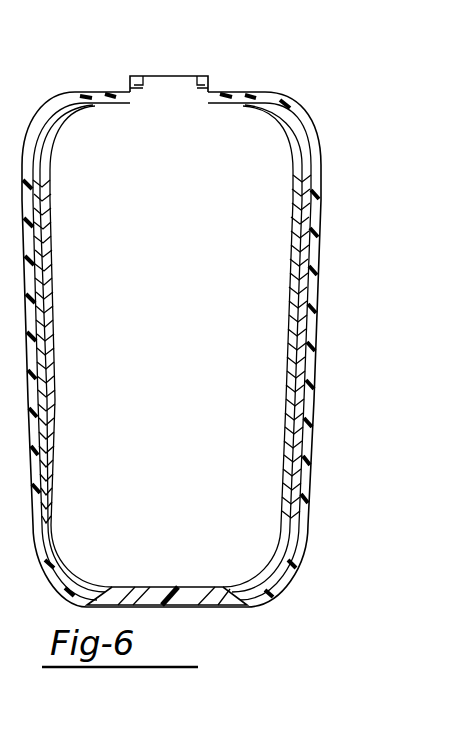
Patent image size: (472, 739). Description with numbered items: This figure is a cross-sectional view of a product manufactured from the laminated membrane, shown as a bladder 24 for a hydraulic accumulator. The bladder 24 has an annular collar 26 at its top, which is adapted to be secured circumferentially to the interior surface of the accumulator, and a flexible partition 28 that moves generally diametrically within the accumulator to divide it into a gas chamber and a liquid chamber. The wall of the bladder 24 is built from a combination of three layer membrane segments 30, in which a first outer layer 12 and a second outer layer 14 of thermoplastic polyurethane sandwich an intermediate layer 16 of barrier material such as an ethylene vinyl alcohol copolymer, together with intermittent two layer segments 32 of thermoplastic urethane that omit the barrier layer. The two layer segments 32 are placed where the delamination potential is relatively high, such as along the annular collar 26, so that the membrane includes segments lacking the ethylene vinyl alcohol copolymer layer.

The first outer layer 12 is at (72, 95).
The second outer layer 14 is at (90, 104).
The intermediate layer 16 is at (54, 208).
The bladder 24 is at (324, 102).
The annular collar 26 is at (128, 84).
The flexible partition 28 is at (290, 322).
The three layer membrane segments 30 is at (55, 475).
The intermittent two layer segments 32 is at (70, 576).